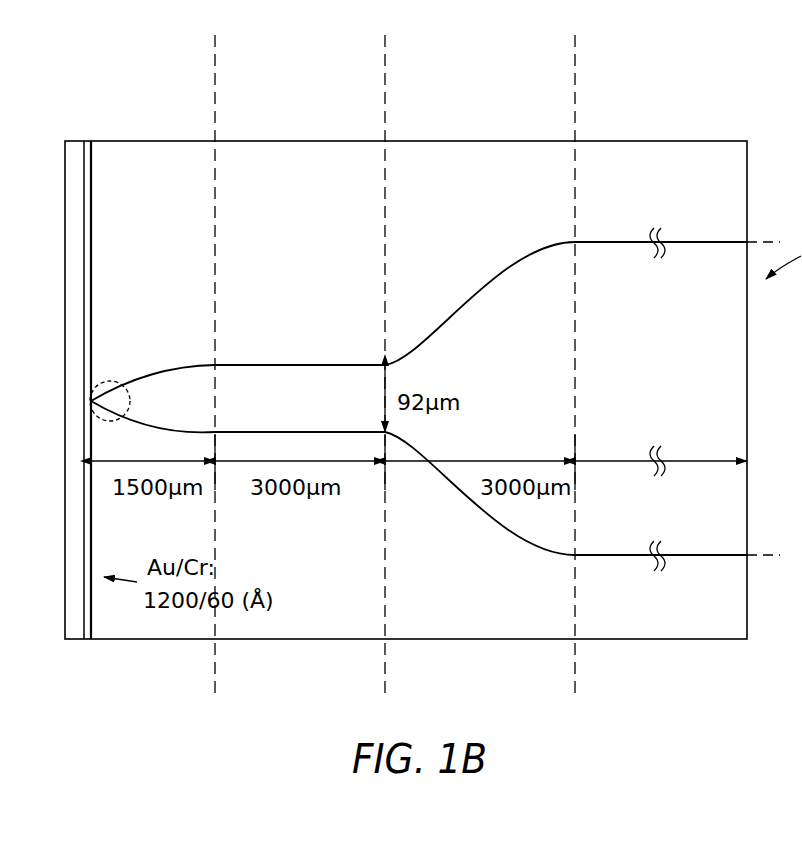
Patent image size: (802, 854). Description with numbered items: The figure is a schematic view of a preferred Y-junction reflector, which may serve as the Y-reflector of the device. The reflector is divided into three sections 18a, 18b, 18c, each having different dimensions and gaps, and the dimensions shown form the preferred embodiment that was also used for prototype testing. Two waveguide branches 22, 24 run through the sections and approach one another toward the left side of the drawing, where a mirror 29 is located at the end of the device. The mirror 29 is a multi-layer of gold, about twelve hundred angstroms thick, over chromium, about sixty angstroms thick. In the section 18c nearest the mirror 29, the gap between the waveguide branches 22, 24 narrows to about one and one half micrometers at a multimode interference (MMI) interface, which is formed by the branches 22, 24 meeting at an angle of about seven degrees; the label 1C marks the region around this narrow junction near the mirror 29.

The input taper tip of waveguide 1C is at (103, 381).
The first section 18a is at (487, 93).
The second section 18b is at (305, 93).
The third section 18c is at (175, 93).
The waveguide branch 22 is at (512, 537).
The waveguide branch 24 is at (478, 290).
The mirror 29 is at (77, 583).